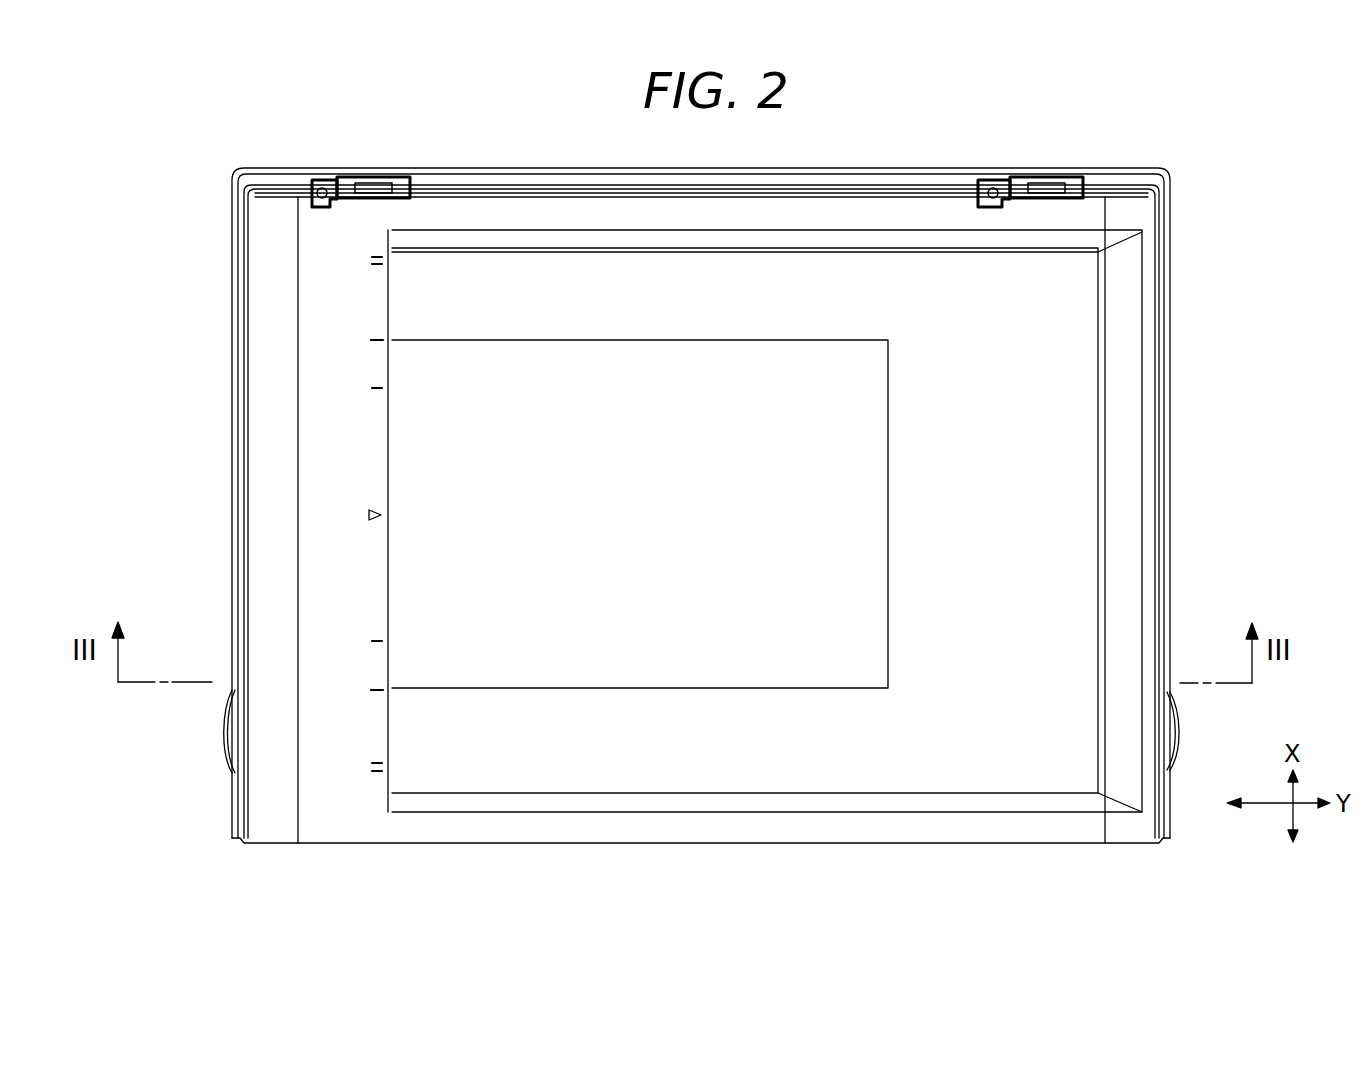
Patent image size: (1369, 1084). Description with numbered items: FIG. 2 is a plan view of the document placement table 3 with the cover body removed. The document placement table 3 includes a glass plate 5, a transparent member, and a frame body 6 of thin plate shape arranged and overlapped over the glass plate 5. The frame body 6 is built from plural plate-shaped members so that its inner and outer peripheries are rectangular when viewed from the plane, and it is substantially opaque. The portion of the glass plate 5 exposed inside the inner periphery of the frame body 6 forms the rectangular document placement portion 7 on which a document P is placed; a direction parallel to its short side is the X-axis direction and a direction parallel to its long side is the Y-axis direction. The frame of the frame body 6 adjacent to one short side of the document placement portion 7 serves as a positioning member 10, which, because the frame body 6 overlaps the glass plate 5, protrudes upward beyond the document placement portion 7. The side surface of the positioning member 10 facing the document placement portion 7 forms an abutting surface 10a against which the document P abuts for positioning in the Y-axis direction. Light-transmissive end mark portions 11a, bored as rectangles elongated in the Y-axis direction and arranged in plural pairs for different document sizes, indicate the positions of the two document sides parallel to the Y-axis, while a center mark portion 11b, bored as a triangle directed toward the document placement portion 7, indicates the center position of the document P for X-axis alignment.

The document placement table 3 is at (1182, 448).
The glass plate 5 is at (948, 777).
The frame body 6 is at (602, 835).
The document placement portion 7 is at (1005, 389).
The positioning member 10 is at (353, 833).
The abutting surface 10a is at (388, 708).
The end mark portions 11a is at (375, 341).
The center mark portion 11b is at (368, 515).
The document P is at (850, 675).